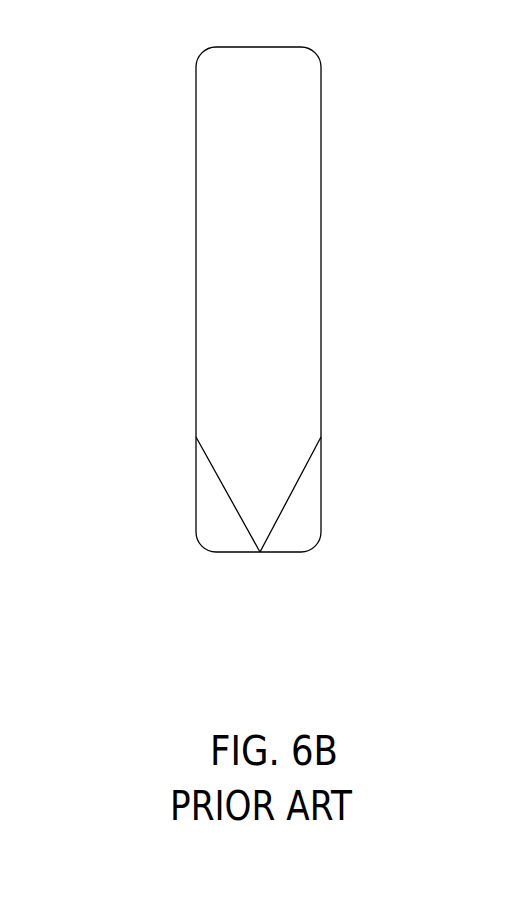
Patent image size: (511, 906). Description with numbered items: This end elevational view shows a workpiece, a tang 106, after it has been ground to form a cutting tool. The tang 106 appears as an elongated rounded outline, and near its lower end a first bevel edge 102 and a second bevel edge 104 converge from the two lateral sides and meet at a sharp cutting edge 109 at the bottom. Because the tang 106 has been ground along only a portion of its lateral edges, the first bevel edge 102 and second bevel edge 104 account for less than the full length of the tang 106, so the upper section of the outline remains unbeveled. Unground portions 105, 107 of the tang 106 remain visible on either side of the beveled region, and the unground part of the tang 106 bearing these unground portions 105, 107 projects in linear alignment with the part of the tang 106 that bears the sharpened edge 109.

The tang 106 is at (337, 85).
The first bevel edge 102 is at (213, 470).
The second bevel edge 104 is at (302, 472).
The unground portion 105 is at (208, 518).
The unground portion 107 is at (321, 522).
The sharp cutting edge 109 is at (260, 552).